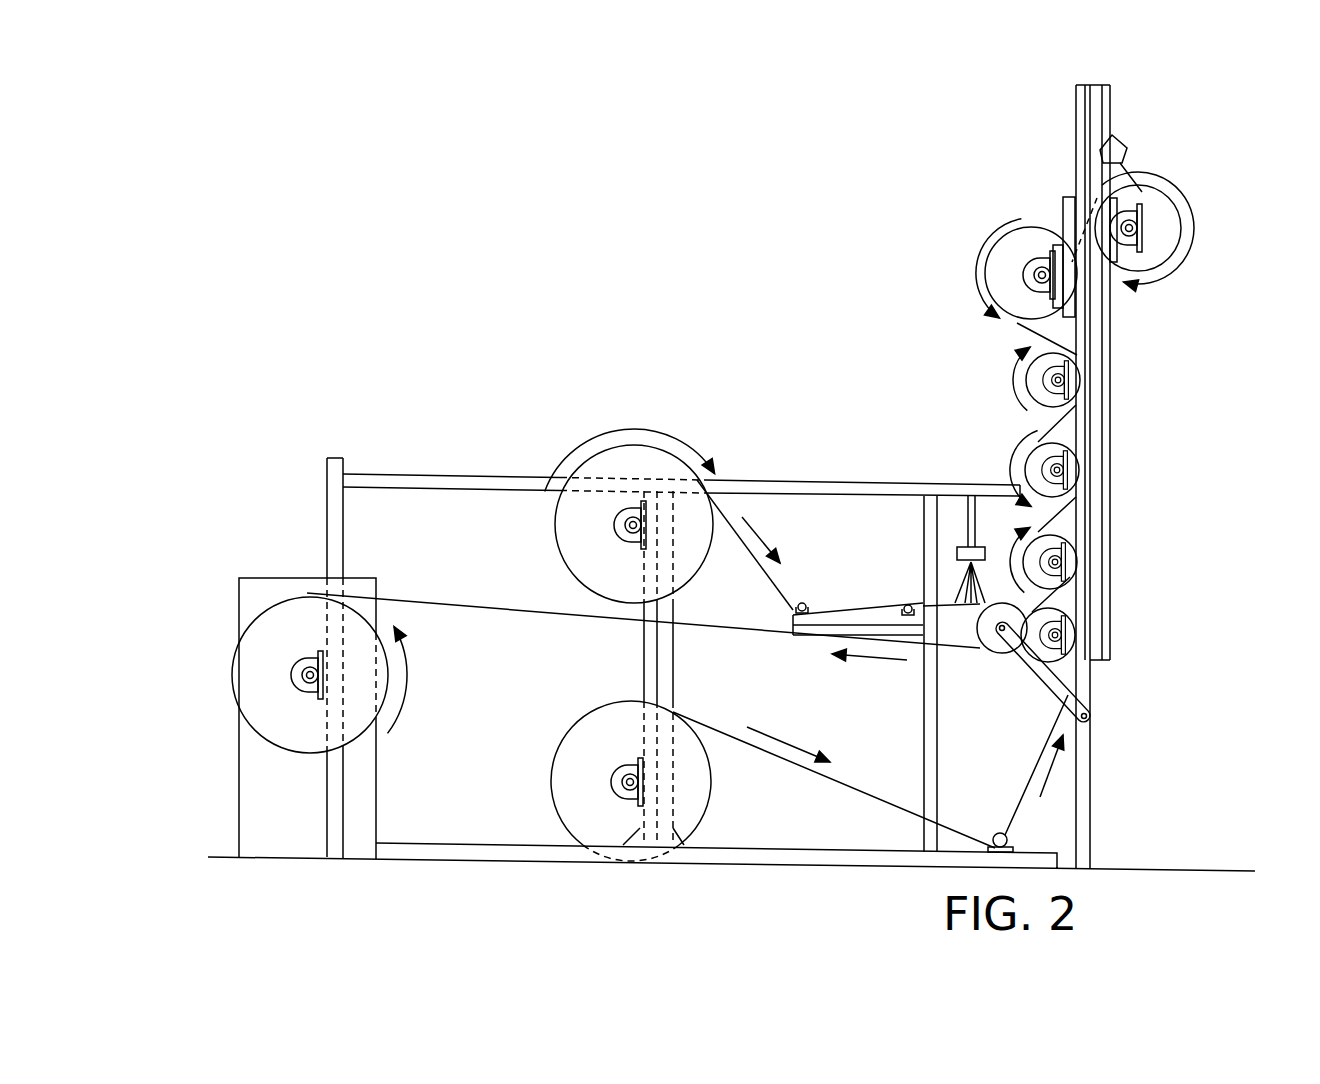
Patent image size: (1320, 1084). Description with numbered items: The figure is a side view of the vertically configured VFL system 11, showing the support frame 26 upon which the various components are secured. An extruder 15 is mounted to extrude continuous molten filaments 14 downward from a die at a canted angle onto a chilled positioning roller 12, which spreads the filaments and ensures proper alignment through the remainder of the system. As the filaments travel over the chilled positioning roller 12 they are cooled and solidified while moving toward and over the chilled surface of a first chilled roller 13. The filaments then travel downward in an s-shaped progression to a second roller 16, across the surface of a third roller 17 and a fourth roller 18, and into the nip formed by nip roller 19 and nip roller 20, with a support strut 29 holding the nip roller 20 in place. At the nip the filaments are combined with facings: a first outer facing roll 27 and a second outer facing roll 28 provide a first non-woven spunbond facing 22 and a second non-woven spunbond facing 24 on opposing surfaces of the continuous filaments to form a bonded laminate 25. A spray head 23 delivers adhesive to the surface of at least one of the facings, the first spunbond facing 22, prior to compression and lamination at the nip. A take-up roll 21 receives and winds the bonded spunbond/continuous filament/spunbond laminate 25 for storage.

The VFL system 11 is at (790, 252).
The chilled positioning roller 12 is at (1147, 210).
The first chilled roller 13 is at (1018, 262).
The continuous molten filaments 14 is at (1130, 170).
The extruder 15 is at (1115, 148).
The second roller 16 is at (1040, 388).
The third roller 17 is at (1053, 447).
The fourth roller 18 is at (1043, 542).
The nip roller 19 is at (1045, 617).
The nip roller 20 is at (1000, 650).
The take-up roll 21 is at (290, 640).
The first non-woven spunbond facing 22 is at (735, 520).
The spray head 23 is at (962, 547).
The second non-woven spunbond facing 24 is at (836, 787).
The bonded laminate 25 is at (488, 614).
The support frame 26 is at (1075, 97).
The first outer facing roll 27 is at (628, 468).
The second outer facing roll 28 is at (598, 820).
The support strut 29 is at (1053, 682).